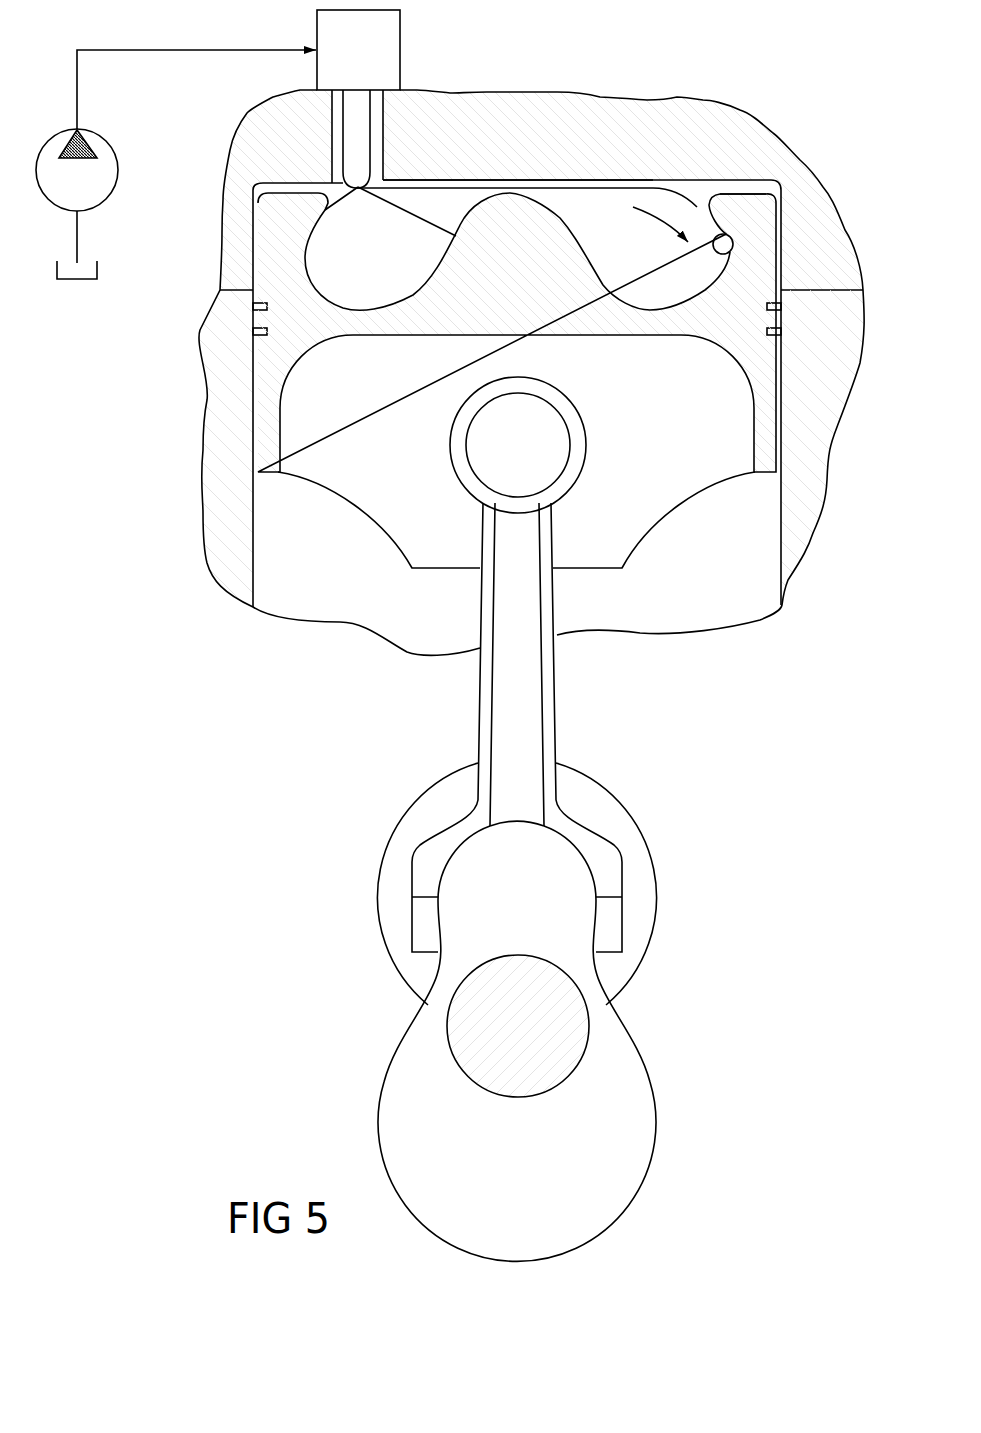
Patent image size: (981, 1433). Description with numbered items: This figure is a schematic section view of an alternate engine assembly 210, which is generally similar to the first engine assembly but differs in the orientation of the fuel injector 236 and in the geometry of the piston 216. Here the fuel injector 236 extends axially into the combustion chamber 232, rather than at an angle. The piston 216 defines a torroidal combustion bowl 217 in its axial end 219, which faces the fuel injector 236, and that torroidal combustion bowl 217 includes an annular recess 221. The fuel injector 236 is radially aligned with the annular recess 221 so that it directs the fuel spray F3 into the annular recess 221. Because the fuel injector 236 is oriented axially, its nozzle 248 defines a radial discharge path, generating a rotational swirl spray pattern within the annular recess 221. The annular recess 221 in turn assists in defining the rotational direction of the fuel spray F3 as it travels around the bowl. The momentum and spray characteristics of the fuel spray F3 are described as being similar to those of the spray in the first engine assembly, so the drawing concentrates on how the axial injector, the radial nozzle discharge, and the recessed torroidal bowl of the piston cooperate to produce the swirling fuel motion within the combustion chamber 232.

The engine assembly 210 is at (779, 119).
The piston 216 is at (782, 455).
The torroidal combustion bowl 217 is at (607, 183).
The axial end 219 is at (748, 193).
The annular recess 221 is at (730, 252).
The combustion chamber 232 is at (672, 182).
The fuel injector 236 is at (317, 62).
The nozzle 248 is at (250, 183).
The fuel spray F3 is at (440, 187).